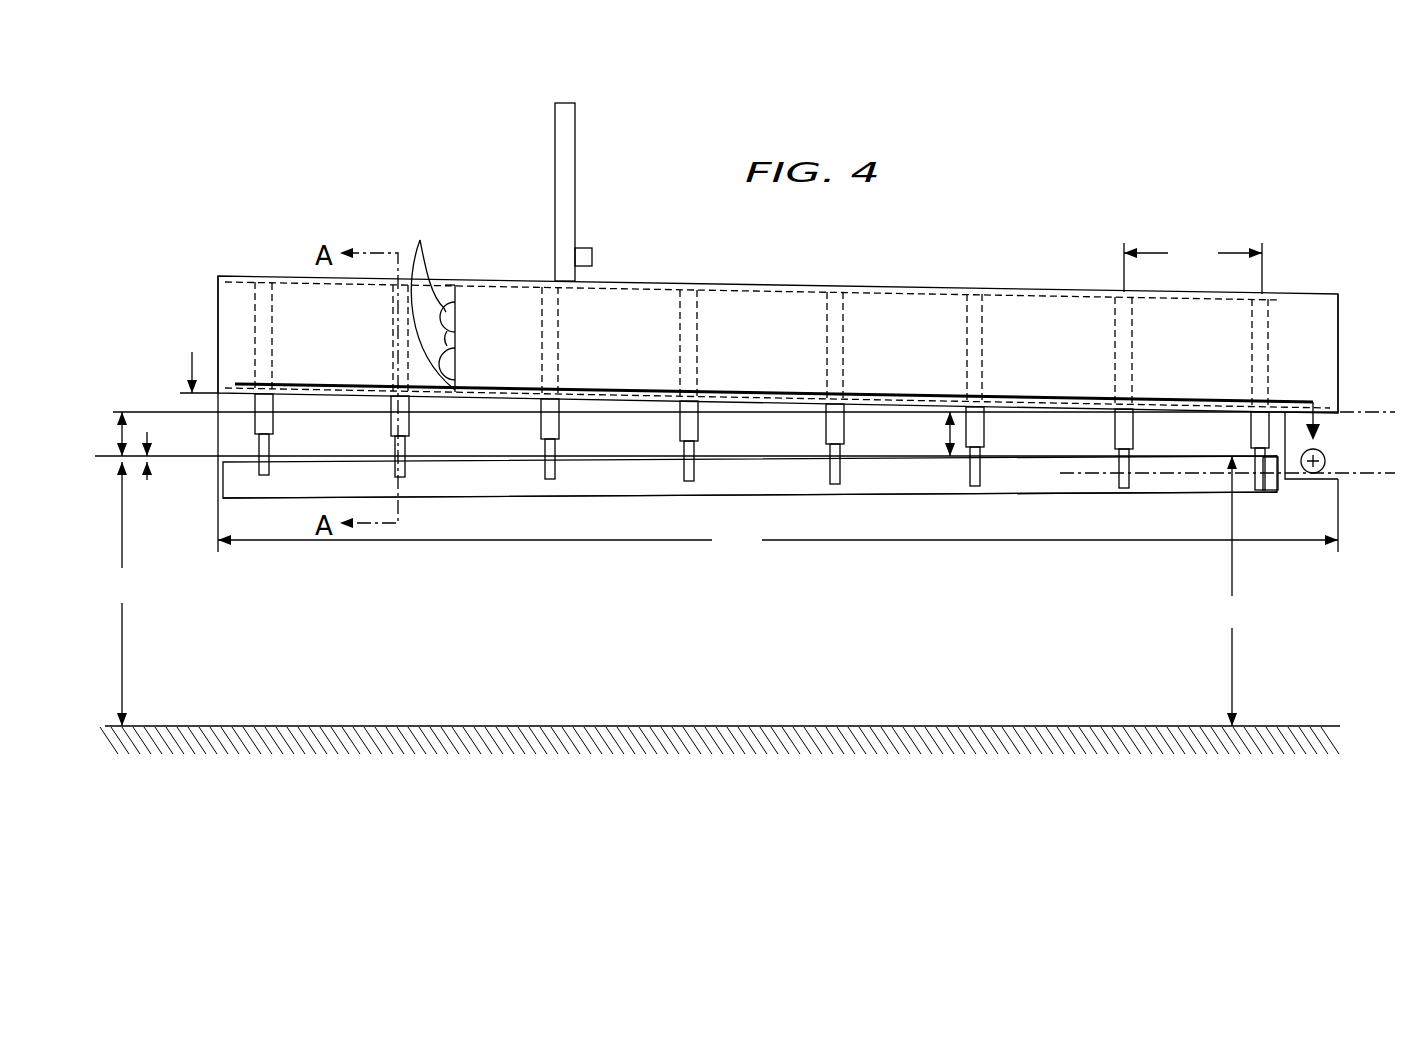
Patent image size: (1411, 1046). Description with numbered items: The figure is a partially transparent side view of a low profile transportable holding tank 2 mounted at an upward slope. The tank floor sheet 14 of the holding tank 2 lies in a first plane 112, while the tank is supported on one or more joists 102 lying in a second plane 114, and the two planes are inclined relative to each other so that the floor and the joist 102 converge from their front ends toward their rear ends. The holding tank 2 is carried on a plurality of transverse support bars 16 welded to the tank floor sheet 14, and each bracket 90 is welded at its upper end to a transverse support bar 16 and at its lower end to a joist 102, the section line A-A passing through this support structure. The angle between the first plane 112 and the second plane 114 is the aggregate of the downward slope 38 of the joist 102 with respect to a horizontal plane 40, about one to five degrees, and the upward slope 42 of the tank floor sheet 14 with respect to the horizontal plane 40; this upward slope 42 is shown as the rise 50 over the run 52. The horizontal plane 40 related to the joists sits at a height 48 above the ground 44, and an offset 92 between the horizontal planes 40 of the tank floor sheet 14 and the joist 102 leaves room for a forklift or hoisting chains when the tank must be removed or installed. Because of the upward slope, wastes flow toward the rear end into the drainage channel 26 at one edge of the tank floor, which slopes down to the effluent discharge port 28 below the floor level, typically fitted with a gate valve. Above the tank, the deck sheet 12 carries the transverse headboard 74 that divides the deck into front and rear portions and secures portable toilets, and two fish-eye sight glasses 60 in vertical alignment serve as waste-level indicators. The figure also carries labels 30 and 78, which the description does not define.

The holding tank 2 is at (988, 268).
The deck sheet 12 is at (748, 284).
The tank floor sheet 14 is at (617, 400).
The transverse support bars 16 is at (273, 426).
The drainage channel 26 is at (1338, 432).
The effluent discharge port 28 is at (1326, 461).
The side wall 30 is at (218, 296).
The downward slope 38 is at (145, 472).
The horizontal plane 40 is at (150, 412).
The upward slope 42 is at (318, 399).
The ground 44 is at (812, 726).
The height 48 is at (138, 602).
The rise 50 is at (208, 352).
The run 52 is at (752, 557).
The sight glasses 60 is at (427, 300).
The headboard 74 is at (562, 103).
The spacing 78 is at (1208, 266).
The bracket 90 is at (545, 452).
The offset 92 is at (122, 436).
The joist 102 is at (1045, 493).
The first plane 112 is at (1375, 395).
The second plane 114 is at (1360, 474).